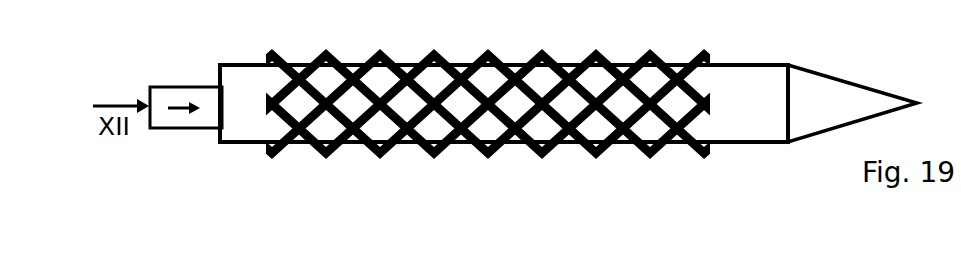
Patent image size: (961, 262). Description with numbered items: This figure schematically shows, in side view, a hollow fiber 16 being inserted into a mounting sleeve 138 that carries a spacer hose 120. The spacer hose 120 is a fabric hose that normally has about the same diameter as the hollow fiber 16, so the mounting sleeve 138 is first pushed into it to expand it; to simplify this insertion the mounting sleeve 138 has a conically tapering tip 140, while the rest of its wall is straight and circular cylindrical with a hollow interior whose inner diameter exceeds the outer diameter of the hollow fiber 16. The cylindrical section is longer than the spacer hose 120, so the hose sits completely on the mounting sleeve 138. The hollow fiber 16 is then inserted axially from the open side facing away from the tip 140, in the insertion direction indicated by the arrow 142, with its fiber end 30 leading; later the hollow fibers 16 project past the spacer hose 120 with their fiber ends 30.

The fiber end 30 is at (158, 90).
The hollow fiber 16 is at (210, 98).
The arrow 142 is at (175, 112).
The spacer hose 120 is at (436, 62).
The mounting sleeve 138 is at (760, 82).
The conically tapering tip 140 is at (847, 103).